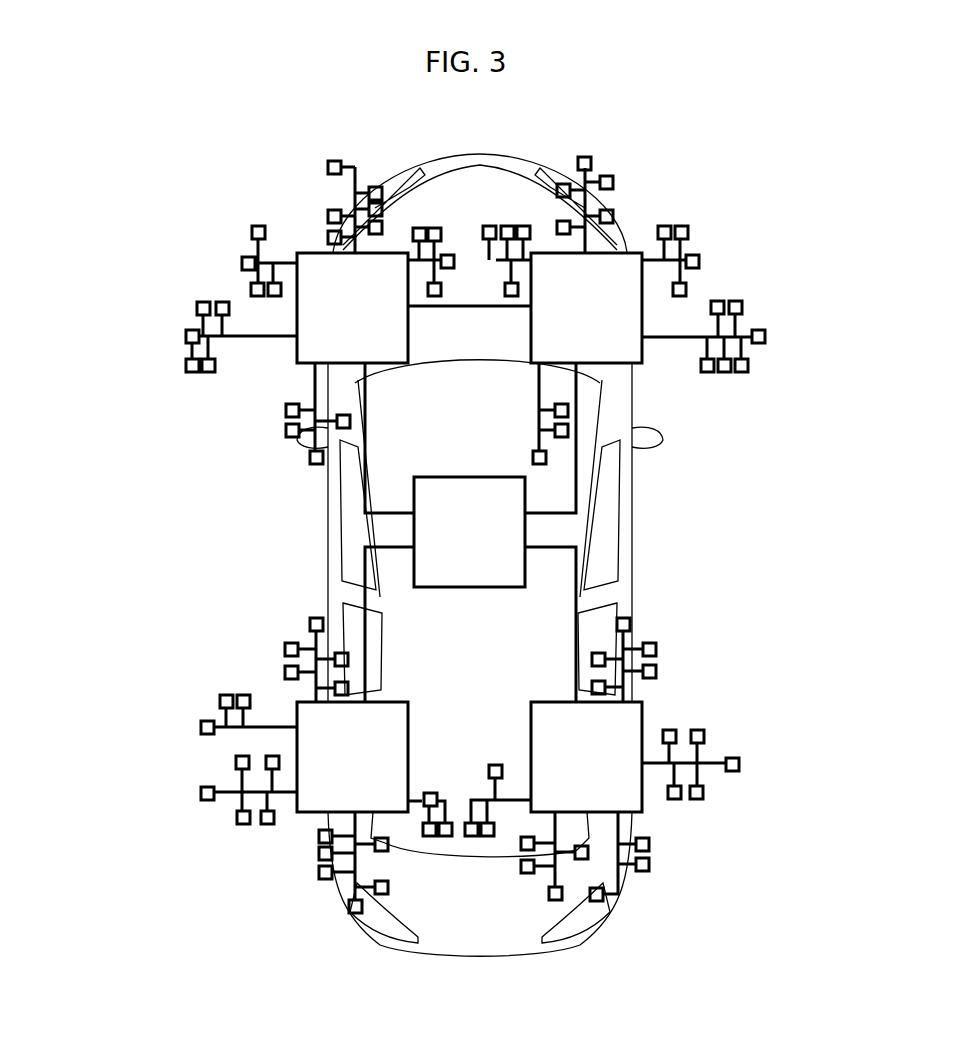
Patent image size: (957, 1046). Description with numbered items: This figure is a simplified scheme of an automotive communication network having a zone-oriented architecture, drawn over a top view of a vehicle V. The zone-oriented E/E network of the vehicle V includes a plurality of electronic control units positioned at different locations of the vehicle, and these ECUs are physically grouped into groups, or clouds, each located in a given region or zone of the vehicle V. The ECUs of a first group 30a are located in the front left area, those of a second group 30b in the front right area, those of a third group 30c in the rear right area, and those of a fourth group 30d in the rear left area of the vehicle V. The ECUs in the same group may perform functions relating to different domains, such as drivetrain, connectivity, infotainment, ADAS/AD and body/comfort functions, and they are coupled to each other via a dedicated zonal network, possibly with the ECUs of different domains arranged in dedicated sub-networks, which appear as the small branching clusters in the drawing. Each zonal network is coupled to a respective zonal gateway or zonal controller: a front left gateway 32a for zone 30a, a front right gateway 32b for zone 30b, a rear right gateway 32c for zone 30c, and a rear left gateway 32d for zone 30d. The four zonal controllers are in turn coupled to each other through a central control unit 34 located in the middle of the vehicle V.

The vehicle V is at (826, 211).
The first group 30a is at (151, 340).
The second group 30b is at (799, 333).
The third group 30c is at (797, 772).
The fourth group 30d is at (163, 763).
The front left gateway 32a is at (297, 353).
The front right gateway 32b is at (642, 362).
The rear right gateway 32c is at (642, 716).
The rear left gateway 32d is at (297, 722).
The central control unit 34 is at (468, 572).